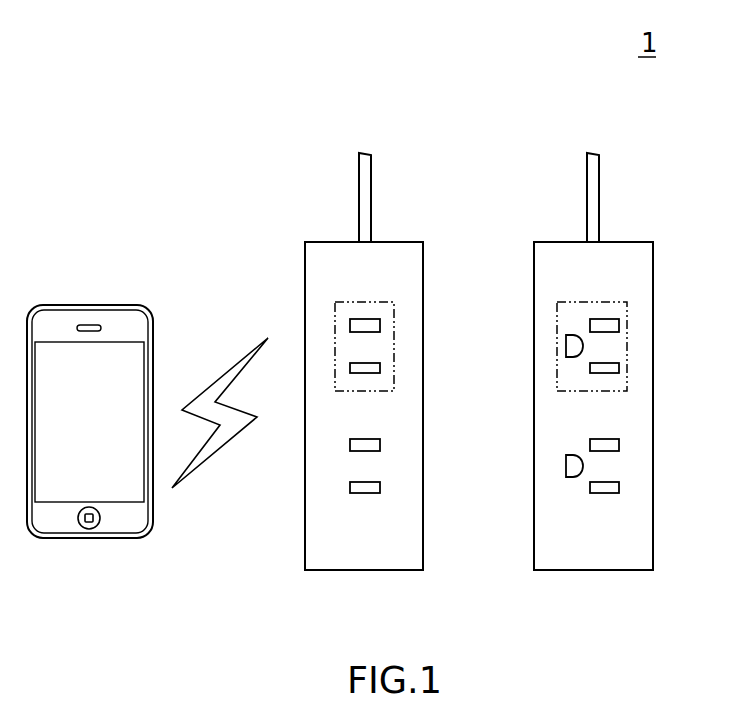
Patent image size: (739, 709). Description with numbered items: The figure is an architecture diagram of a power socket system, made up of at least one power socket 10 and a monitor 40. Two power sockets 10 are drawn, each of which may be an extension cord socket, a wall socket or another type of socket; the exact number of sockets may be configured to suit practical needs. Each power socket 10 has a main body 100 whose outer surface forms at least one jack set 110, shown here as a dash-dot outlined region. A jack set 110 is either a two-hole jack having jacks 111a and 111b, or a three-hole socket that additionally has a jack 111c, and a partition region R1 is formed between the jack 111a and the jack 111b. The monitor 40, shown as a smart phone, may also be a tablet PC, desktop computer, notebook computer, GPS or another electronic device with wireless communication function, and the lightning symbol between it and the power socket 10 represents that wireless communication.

The power socket 10 is at (397, 242).
The monitor 40 is at (90, 540).
The main body 100 is at (423, 418).
The jack set 110 is at (394, 322).
The jack 111a is at (355, 326).
The jack 111b is at (367, 370).
The jack 111c is at (572, 338).
The partition region R1 is at (363, 348).